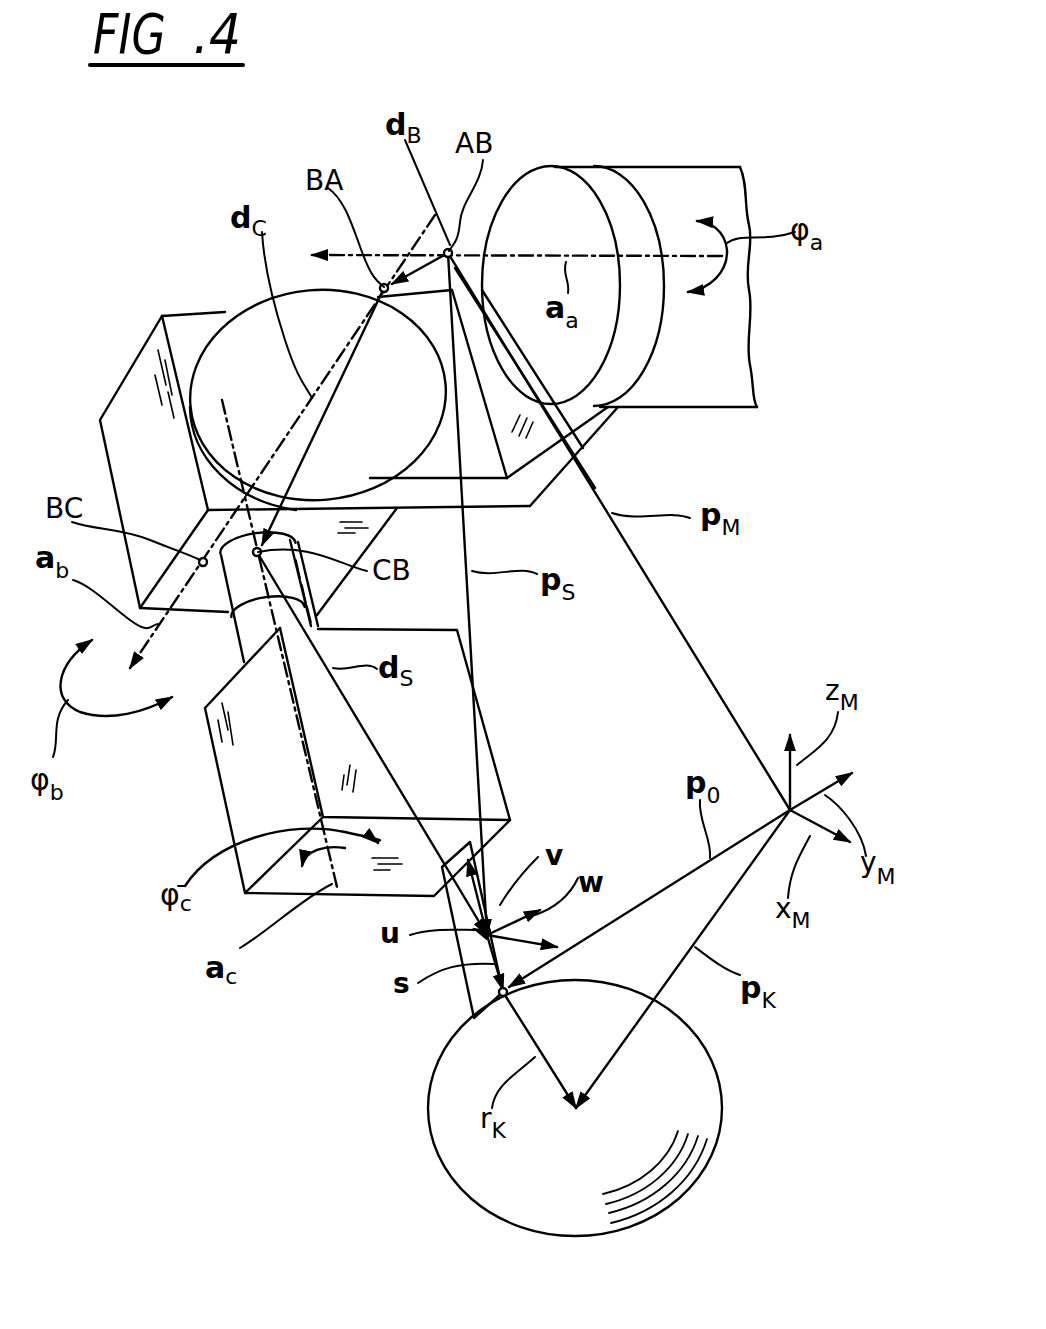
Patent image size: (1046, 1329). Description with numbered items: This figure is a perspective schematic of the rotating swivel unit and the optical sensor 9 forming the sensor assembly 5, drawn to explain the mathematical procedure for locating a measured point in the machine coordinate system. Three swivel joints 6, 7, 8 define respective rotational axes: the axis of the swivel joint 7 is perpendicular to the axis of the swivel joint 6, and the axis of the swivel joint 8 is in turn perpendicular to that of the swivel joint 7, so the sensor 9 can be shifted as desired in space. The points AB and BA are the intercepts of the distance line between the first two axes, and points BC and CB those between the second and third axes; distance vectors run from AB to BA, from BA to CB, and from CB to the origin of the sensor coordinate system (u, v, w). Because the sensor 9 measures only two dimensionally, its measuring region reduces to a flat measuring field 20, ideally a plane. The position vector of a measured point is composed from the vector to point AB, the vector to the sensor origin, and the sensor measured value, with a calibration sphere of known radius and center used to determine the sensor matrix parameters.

The sensor assembly 5 is at (86, 384).
The swivel joint 6 is at (580, 168).
The swivel joint 7 is at (235, 312).
The swivel joint 8 is at (244, 660).
The optical sensor 9 is at (500, 792).
The flat measuring field 20 is at (480, 993).